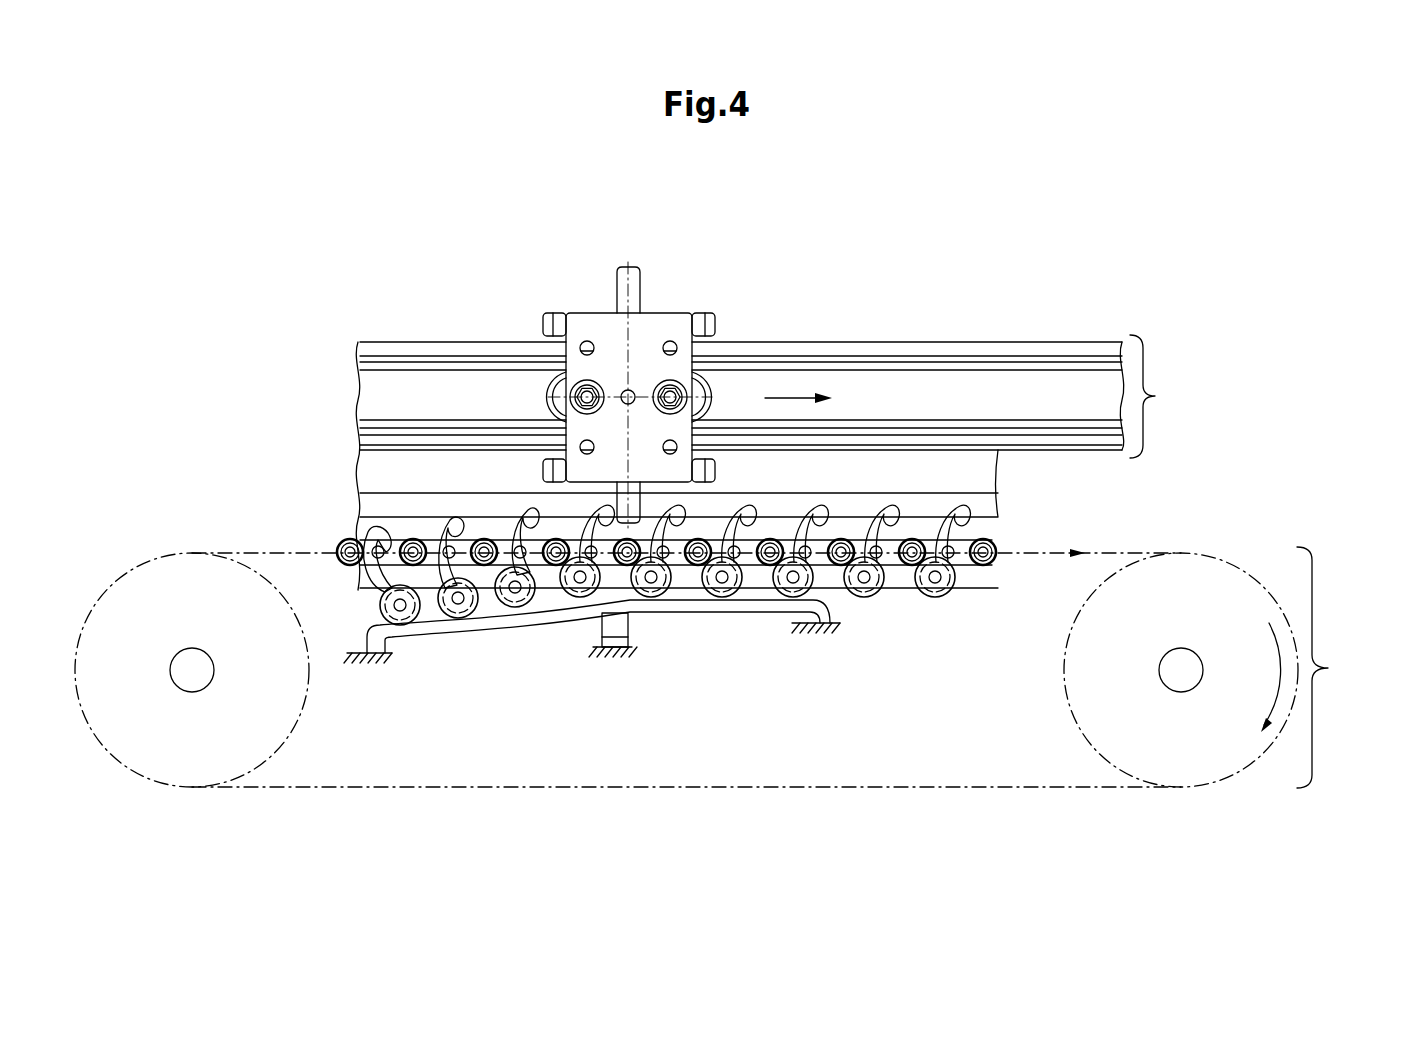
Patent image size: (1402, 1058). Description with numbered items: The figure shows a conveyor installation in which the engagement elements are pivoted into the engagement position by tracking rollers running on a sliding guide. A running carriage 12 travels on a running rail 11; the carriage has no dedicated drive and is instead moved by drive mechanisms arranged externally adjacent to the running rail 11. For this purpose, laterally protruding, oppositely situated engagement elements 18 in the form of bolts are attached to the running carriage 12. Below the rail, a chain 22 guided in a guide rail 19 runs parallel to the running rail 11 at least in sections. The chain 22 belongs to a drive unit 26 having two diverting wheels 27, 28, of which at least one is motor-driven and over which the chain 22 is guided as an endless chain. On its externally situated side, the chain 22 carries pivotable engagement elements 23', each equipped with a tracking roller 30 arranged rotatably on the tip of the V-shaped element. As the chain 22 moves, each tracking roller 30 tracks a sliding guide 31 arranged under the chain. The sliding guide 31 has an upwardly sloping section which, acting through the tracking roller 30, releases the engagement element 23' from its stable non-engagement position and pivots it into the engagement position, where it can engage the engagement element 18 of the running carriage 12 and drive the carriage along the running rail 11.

The running rail 11 is at (773, 462).
The running carriage 12 is at (580, 288).
The engagement element 18 is at (636, 284).
The guide rail 19 is at (990, 500).
The chain 22 is at (393, 547).
The engagement element 23' is at (728, 541).
The drive unit 26 is at (780, 667).
The diverting wheel 27 is at (167, 765).
The diverting wheel 28 is at (1203, 760).
The tracking roller 30 is at (950, 598).
The sliding guide 31 is at (497, 622).